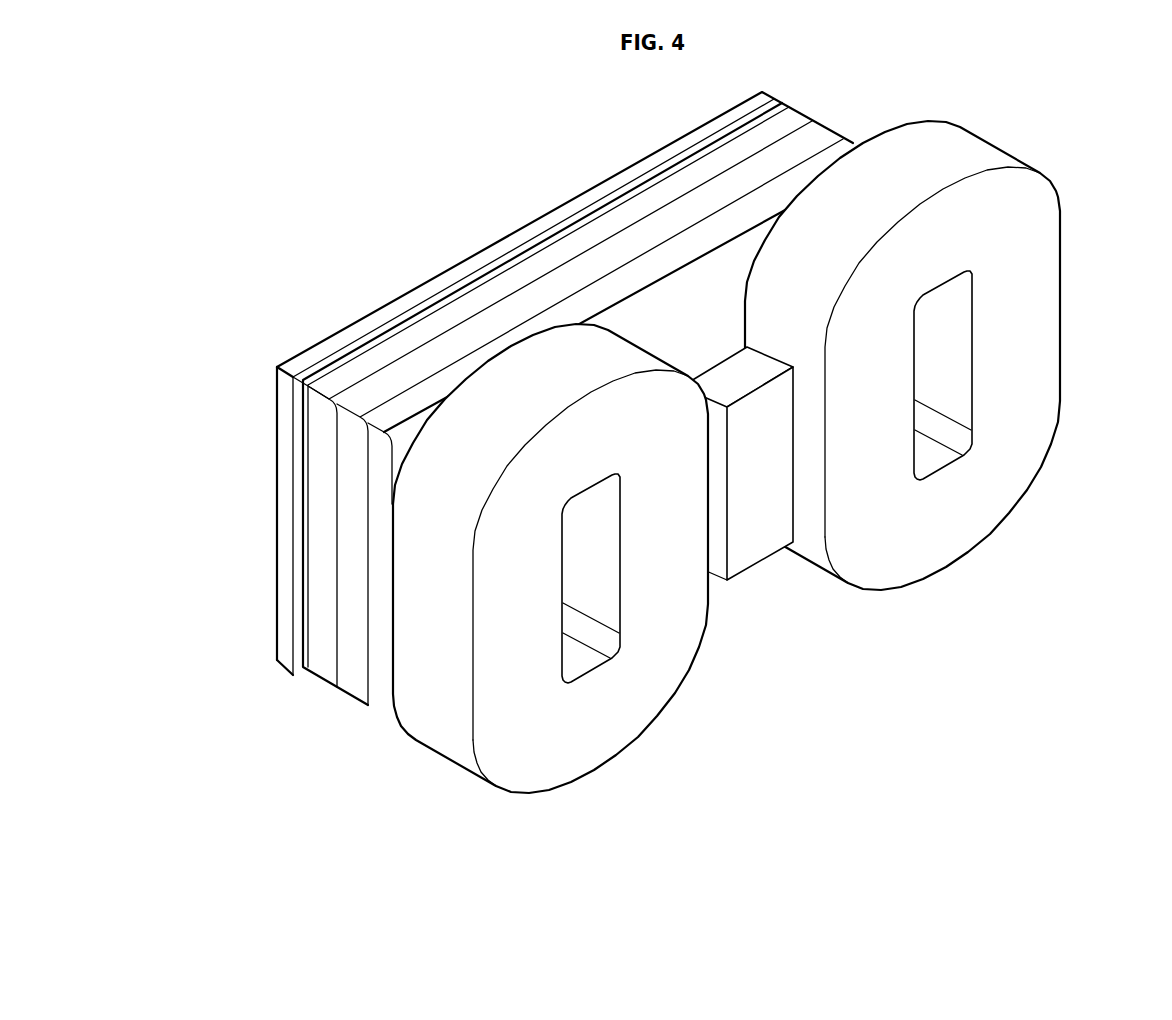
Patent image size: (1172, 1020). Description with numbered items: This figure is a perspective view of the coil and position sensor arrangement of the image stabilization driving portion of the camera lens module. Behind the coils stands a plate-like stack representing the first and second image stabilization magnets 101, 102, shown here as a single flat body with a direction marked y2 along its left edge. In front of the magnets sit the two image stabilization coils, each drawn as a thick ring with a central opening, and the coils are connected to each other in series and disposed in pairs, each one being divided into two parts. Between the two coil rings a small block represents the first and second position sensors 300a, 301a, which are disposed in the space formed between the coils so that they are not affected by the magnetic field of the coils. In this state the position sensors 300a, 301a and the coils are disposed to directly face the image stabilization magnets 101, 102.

The first image stabilization magnet 101 is at (500, 398).
The second image stabilization magnet 102 is at (500, 398).
The first position sensor 300a is at (834, 519).
The second position sensor 301a is at (745, 555).
The reference line y2 is at (283, 513).